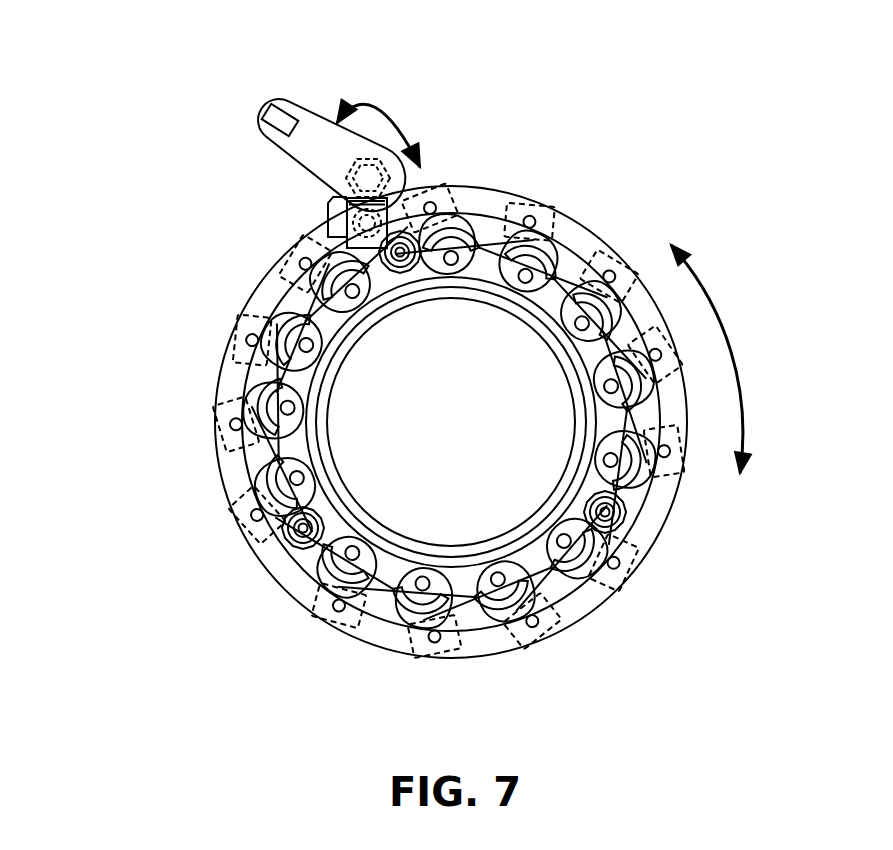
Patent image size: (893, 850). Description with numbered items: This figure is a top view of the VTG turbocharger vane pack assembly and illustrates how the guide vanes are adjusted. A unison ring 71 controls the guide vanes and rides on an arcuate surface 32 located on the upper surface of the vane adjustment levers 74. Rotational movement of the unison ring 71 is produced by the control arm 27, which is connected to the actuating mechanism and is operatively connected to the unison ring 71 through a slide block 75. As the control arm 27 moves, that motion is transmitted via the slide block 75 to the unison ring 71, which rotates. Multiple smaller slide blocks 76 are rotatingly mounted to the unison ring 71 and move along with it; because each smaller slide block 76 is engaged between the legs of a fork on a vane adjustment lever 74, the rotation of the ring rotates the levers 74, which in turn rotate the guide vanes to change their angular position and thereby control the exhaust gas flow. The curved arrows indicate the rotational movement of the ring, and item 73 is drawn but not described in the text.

The control arm 27 is at (330, 140).
The arcuate surface 32 is at (290, 540).
The unison ring 71 is at (196, 376).
The rotation direction arrow / outer ring 73 is at (668, 512).
The vane adjustment lever 74 is at (432, 193).
The slide block 75 is at (347, 228).
The smaller slide block 76 is at (524, 213).